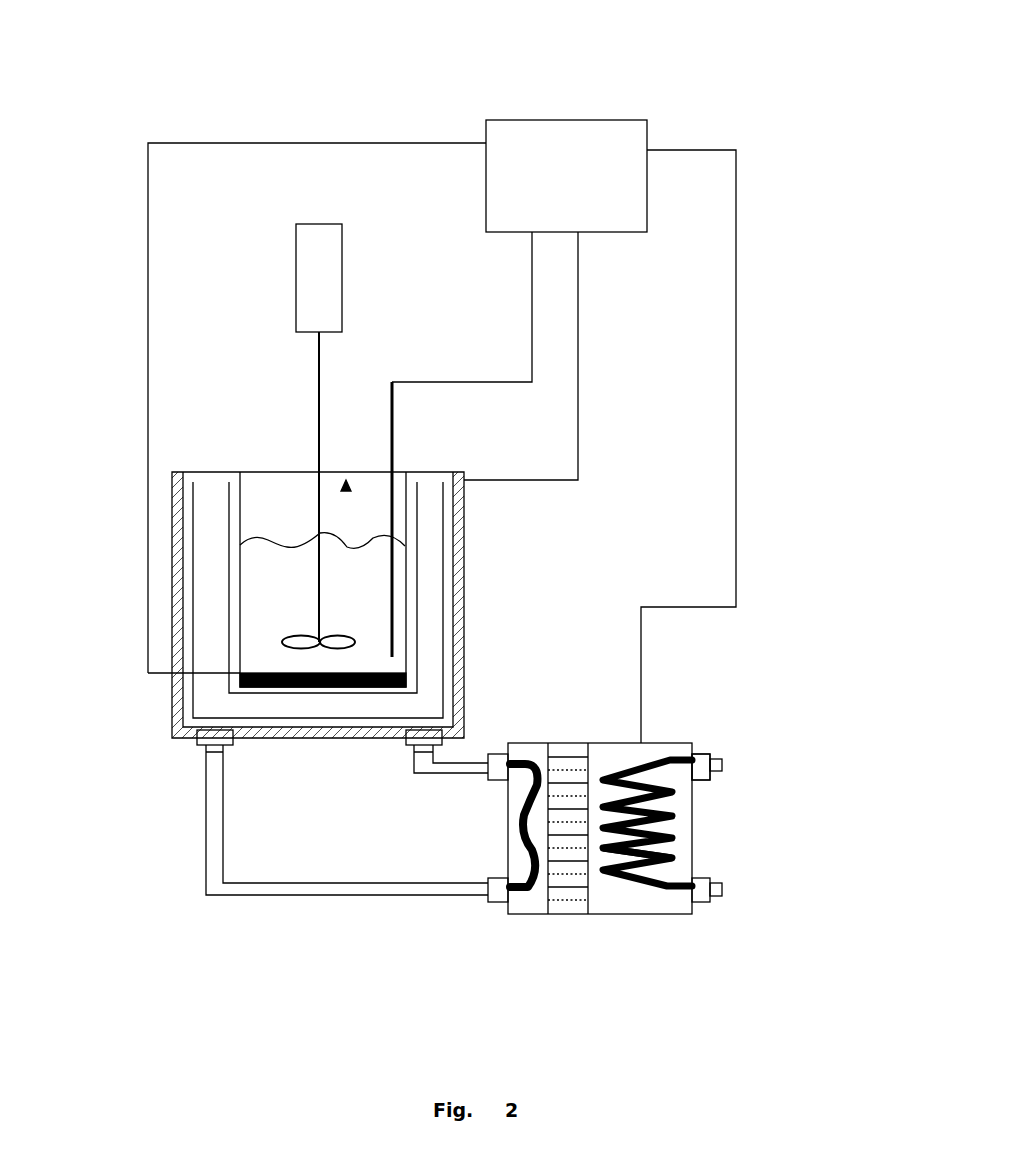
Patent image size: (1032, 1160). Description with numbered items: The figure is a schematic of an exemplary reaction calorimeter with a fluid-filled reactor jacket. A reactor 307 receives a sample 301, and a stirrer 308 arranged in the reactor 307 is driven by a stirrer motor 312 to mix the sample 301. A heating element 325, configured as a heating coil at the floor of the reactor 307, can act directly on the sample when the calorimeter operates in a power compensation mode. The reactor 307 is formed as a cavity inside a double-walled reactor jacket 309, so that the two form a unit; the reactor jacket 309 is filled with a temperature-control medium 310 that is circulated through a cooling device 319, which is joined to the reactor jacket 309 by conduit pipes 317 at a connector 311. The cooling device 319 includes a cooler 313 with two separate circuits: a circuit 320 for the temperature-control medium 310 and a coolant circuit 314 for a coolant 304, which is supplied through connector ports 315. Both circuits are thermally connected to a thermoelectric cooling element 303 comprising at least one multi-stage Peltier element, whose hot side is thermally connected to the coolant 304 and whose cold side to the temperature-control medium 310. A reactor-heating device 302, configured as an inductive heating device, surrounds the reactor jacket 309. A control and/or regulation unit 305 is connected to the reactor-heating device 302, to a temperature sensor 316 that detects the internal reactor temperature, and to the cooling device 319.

The sample 301 is at (258, 645).
The reactor-heating device 302 is at (178, 510).
The thermoelectric cooling element 303 is at (565, 874).
The coolant 304 is at (761, 820).
The control and/or regulation unit 305 is at (566, 163).
The reactor 307 is at (344, 485).
The stirrer 308 is at (315, 511).
The reactor jacket 309 is at (205, 478).
The temperature-control medium 310 is at (218, 568).
The connector 311 is at (198, 733).
The stirrer motor 312 is at (323, 246).
The cooler 313 is at (692, 828).
The coolant circuit 314 is at (673, 790).
The connector port 315 is at (703, 762).
The temperature sensor 316 is at (390, 453).
The conduit pipe 317 is at (215, 808).
The cooling device 319 is at (704, 868).
The circuit 320 is at (523, 890).
The heating element 325 is at (240, 672).